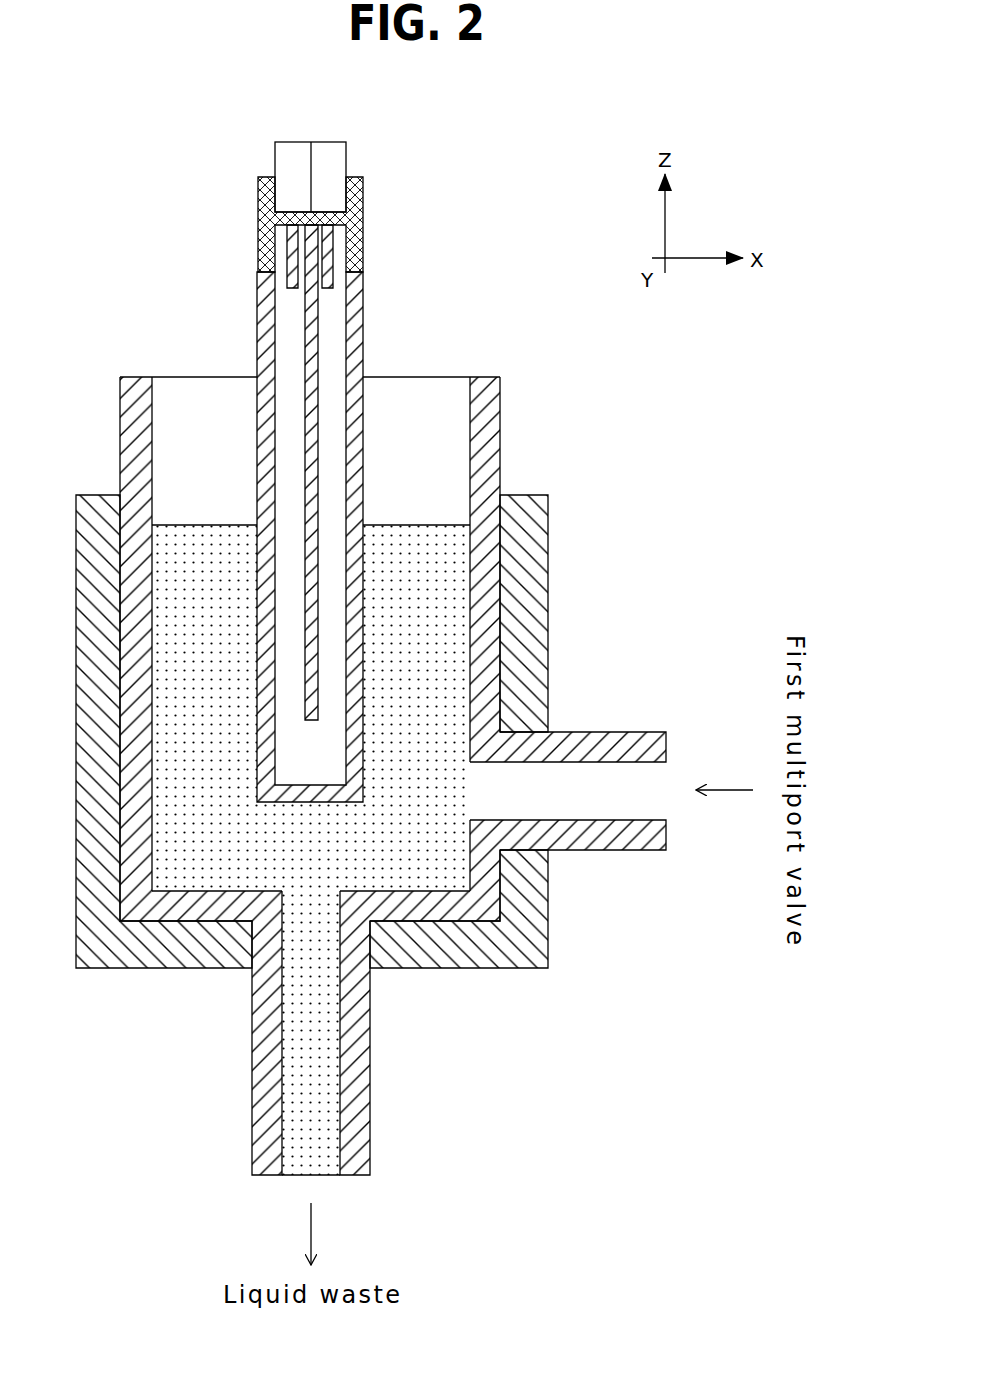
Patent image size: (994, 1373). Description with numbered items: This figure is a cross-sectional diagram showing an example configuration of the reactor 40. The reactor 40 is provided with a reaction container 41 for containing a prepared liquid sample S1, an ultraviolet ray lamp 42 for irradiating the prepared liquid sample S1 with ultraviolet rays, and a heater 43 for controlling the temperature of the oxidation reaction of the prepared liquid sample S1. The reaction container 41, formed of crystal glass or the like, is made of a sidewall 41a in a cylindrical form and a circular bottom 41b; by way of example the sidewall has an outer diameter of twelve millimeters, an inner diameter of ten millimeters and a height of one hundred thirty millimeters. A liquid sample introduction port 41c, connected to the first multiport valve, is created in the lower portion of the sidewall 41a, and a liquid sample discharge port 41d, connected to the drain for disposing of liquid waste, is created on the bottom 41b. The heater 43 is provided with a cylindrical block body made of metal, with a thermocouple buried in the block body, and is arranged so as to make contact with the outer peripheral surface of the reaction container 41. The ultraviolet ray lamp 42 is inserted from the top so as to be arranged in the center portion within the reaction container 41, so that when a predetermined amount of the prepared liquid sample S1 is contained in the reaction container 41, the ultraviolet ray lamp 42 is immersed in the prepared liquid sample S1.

The reactor 40 is at (174, 200).
The reaction container 41 is at (665, 908).
The sidewall 41a is at (470, 855).
The bottom 41b is at (460, 920).
The liquid sample introduction port 41c is at (620, 797).
The liquid sample discharge port 41d is at (370, 1027).
The ultraviolet ray lamp 42 is at (257, 330).
The heater 43 is at (548, 613).
The prepared liquid sample S1 is at (418, 535).